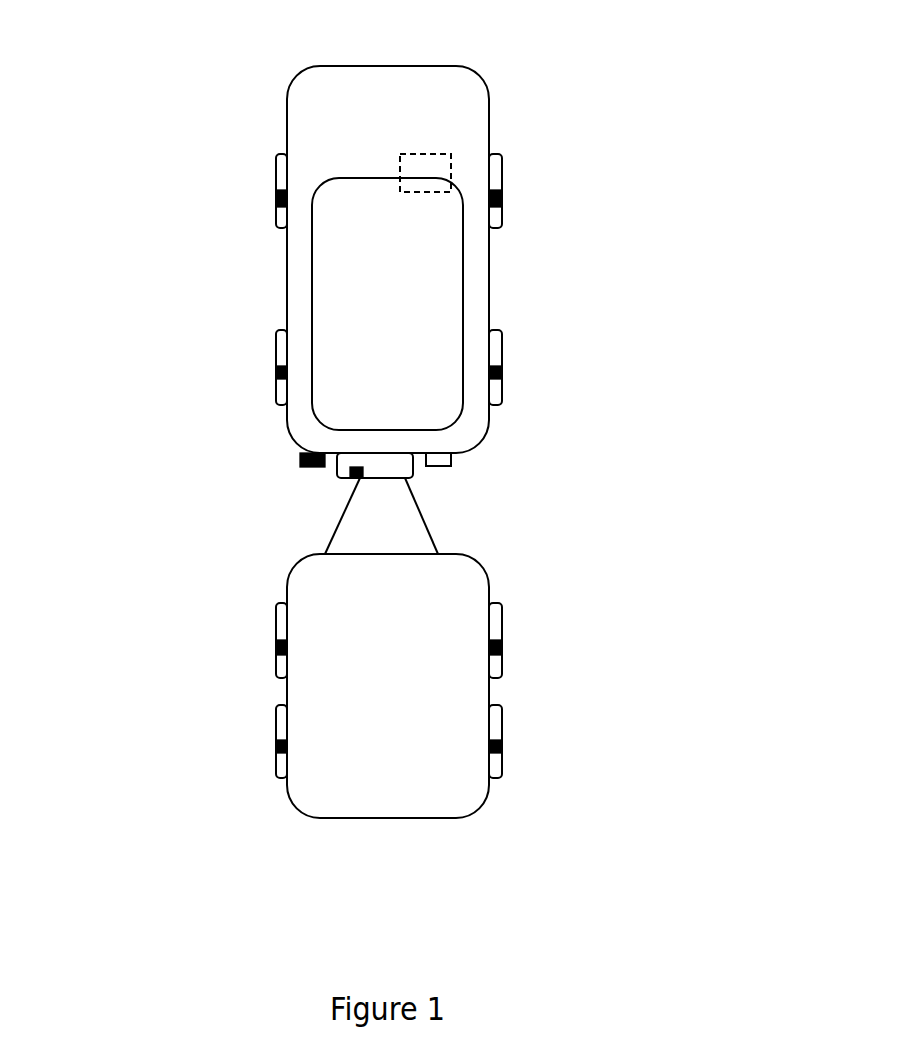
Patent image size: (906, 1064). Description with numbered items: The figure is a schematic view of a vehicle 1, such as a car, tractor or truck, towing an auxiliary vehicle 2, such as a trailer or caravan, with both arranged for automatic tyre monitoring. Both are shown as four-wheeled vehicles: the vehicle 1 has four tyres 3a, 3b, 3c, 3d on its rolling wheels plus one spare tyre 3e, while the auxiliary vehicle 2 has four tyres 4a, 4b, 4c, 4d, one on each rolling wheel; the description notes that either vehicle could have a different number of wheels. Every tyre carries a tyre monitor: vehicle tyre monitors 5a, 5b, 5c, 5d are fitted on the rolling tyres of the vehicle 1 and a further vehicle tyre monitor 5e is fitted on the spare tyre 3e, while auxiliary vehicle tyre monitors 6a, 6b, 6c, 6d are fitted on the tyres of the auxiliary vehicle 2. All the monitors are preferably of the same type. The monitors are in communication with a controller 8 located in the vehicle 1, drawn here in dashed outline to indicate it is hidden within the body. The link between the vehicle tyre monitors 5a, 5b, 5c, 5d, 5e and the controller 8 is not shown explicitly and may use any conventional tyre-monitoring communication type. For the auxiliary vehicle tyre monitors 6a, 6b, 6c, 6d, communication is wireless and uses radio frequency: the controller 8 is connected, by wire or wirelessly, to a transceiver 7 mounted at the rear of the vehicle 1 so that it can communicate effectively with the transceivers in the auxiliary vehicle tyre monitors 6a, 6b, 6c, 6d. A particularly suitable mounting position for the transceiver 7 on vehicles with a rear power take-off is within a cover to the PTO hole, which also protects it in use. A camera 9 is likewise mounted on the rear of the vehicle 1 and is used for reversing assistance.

The vehicle 1 is at (272, 115).
The auxiliary vehicle 2 is at (262, 565).
The tyre 3a is at (273, 177).
The tyre 3b is at (272, 342).
The tyre 3c is at (505, 163).
The tyre 3d is at (505, 340).
The spare tyre 3e is at (420, 480).
The tyre 4a is at (272, 617).
The tyre 4b is at (272, 717).
The tyre 4c is at (503, 613).
The tyre 4d is at (503, 715).
The vehicle tyre monitor 5a is at (272, 203).
The vehicle tyre monitor 5b is at (272, 378).
The vehicle tyre monitor 5c is at (503, 205).
The vehicle tyre monitor 5d is at (505, 378).
The vehicle tyre monitor 5e is at (345, 480).
The auxiliary vehicle tyre monitor 6a is at (272, 655).
The auxiliary vehicle tyre monitor 6b is at (272, 757).
The auxiliary vehicle tyre monitor 6c is at (503, 655).
The auxiliary vehicle tyre monitor 6d is at (503, 757).
The transceiver 7 is at (453, 467).
The controller 8 is at (438, 152).
The camera 9 is at (298, 454).